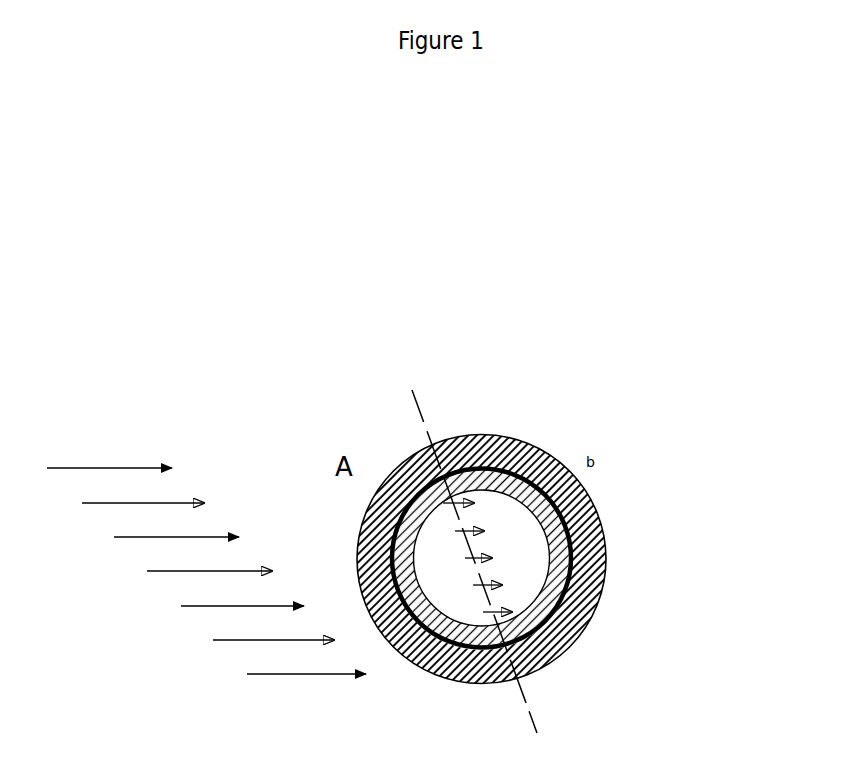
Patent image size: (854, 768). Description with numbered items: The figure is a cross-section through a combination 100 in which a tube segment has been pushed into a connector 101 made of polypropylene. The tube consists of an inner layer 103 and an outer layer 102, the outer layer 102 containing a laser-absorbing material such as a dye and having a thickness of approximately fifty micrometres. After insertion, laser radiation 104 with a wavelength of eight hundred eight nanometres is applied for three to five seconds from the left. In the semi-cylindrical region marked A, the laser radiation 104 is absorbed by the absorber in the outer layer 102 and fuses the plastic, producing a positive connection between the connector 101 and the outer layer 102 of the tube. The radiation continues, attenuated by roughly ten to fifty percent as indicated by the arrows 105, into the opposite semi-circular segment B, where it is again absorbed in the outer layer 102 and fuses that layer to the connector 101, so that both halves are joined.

The combination 100 is at (584, 408).
The connector 101 is at (436, 472).
The outer layer 102 is at (481, 472).
The inner layer 103 is at (525, 476).
The laser radiation 104 is at (116, 449).
The arrows 105 is at (521, 594).